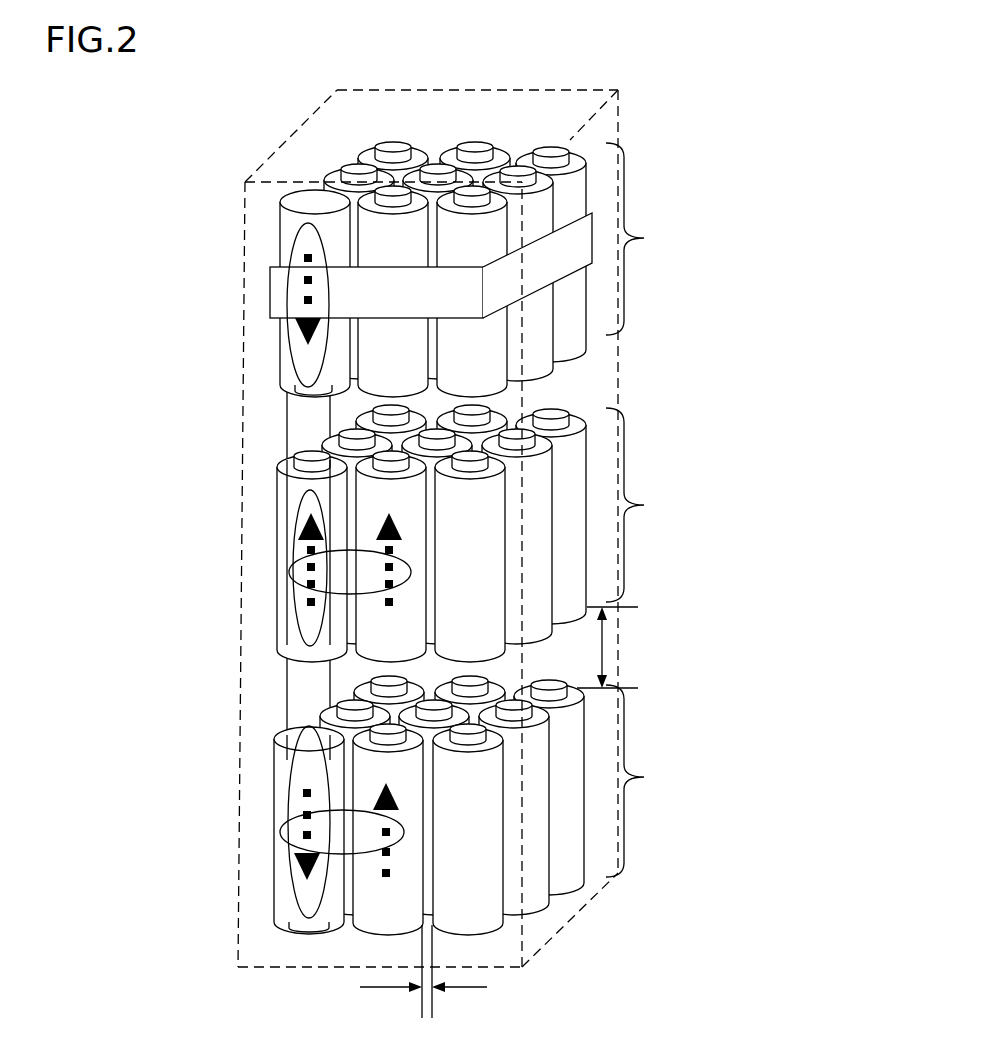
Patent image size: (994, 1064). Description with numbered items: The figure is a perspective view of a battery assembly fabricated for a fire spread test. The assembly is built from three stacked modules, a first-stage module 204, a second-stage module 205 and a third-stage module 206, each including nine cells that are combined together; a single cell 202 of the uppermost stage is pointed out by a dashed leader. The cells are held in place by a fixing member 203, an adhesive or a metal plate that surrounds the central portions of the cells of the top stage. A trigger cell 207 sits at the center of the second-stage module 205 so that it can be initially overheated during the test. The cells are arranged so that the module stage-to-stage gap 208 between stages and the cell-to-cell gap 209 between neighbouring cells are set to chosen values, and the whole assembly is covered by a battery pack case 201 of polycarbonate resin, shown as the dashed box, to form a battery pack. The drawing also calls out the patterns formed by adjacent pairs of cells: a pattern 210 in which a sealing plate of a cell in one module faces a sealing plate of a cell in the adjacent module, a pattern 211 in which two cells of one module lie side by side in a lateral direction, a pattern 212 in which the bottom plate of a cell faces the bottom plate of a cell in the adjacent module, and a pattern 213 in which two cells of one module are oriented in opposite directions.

The battery pack case 201 is at (288, 125).
The battery cell 202 is at (549, 146).
The fixing member 203 is at (279, 295).
The first-stage module 204 is at (494, 231).
The second-stage module 205 is at (492, 520).
The third-stage module 206 is at (489, 805).
The trigger cell 207 is at (441, 438).
The module stage-to-stage gap 208 is at (627, 647).
The cell-to-cell gap 209 is at (457, 971).
The pattern 210 is at (283, 408).
The pattern 211 is at (289, 575).
The pattern 212 is at (288, 668).
The pattern 213 is at (280, 830).